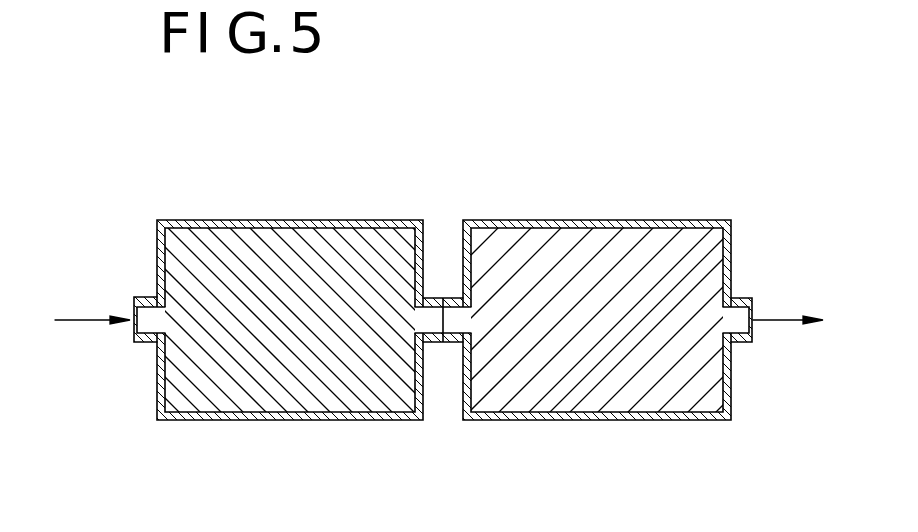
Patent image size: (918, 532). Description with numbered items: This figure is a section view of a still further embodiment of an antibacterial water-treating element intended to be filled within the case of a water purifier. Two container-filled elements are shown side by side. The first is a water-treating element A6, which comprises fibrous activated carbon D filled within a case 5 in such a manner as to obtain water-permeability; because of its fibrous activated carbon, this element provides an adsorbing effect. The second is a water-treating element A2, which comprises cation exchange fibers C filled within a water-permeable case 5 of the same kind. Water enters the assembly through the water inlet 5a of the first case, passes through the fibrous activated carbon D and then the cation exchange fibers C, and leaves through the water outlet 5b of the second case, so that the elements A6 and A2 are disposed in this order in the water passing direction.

The case 5 is at (337, 422).
The water inlet 5a is at (135, 328).
The water outlet 5b is at (753, 333).
The fibrous activated carbon D is at (312, 280).
The cation exchange fibers C is at (602, 282).
The water-treating element A6 is at (340, 217).
The water-treating element A2 is at (682, 217).